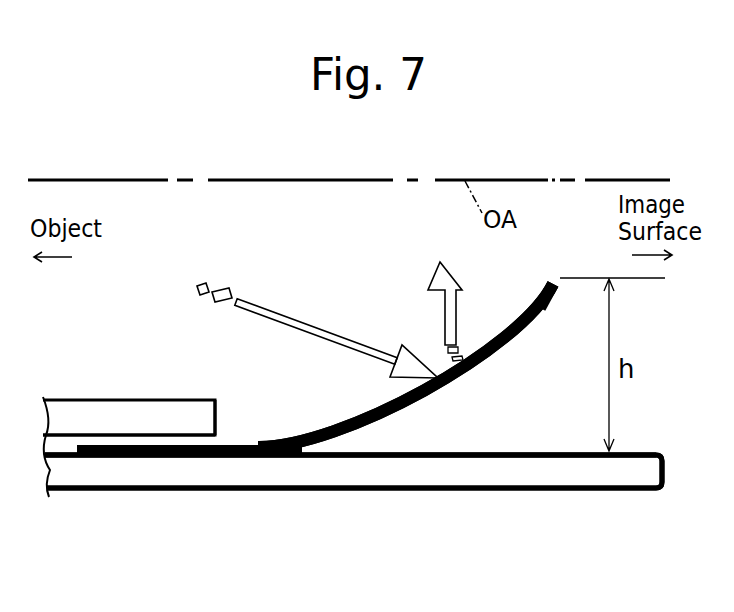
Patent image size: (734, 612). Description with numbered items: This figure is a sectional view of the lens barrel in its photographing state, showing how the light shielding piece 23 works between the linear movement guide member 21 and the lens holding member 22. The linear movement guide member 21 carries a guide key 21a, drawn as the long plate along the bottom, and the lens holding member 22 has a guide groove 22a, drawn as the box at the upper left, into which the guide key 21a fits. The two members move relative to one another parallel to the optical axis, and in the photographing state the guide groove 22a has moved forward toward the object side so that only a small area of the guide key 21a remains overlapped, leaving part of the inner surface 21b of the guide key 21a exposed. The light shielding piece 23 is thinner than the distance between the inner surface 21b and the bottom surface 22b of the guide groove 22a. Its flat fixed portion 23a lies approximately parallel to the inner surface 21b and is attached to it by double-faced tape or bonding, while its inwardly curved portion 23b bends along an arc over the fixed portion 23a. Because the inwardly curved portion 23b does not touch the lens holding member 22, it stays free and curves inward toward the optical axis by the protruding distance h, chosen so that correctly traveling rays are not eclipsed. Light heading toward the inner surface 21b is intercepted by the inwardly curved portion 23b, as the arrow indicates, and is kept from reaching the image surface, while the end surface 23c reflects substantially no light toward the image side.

The linear movement guide member 21 is at (352, 469).
The guide key 21a is at (550, 473).
The inner surface of the guide key 21b is at (419, 454).
The lens holding member 22 is at (108, 413).
The guide groove 22a is at (148, 440).
The bottom surface of the guide groove 22b is at (196, 438).
The light shielding piece 23 is at (336, 417).
The fixed portion 23a is at (102, 445).
The inwardly curved portion 23b is at (523, 335).
The end surface of the inwardly curved portion 23c is at (553, 278).